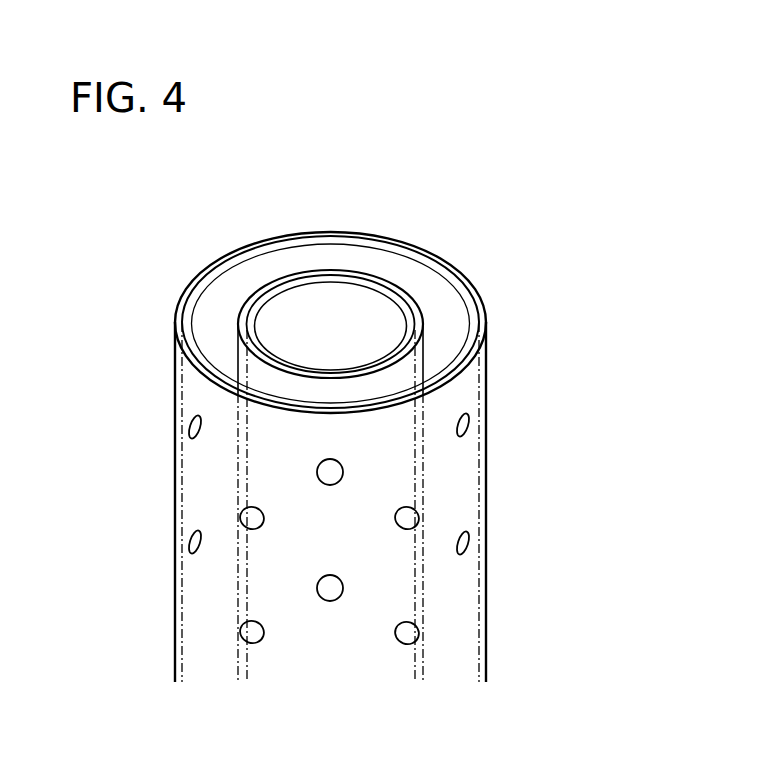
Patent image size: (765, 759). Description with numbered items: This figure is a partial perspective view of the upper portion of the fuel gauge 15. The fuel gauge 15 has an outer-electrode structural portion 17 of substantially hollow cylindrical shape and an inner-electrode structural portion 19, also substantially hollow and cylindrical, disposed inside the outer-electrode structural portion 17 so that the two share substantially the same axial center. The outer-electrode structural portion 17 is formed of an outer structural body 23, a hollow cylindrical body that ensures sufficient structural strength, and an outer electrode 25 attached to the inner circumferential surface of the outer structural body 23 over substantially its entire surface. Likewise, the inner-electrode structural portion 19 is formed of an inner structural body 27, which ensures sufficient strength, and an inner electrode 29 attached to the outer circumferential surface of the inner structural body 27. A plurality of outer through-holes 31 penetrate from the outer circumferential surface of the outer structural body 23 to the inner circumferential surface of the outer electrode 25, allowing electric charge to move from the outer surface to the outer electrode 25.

The fuel gauge 15 is at (570, 207).
The outer-electrode structural portion 17 is at (474, 254).
The inner-electrode structural portion 19 is at (271, 258).
The outer structural body 23 is at (484, 313).
The outer electrode 25 is at (389, 262).
The inner structural body 27 is at (308, 296).
The inner electrode 29 is at (262, 288).
The outer through-holes 31 is at (190, 544).